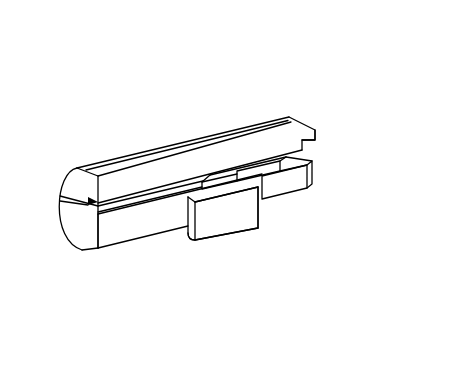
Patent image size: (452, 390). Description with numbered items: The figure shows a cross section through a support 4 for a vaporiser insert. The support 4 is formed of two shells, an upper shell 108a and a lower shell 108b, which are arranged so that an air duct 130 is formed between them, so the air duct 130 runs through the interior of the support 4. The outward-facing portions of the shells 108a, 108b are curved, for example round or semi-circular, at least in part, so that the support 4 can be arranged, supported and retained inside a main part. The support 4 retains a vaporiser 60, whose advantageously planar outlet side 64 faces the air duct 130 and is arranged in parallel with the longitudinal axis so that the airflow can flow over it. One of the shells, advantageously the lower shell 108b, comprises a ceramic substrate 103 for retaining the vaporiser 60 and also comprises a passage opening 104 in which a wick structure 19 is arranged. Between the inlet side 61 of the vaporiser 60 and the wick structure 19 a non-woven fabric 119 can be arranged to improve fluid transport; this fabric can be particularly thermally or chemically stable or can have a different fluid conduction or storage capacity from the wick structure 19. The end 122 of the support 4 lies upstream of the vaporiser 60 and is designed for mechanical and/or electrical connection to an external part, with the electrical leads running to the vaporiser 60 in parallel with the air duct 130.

The support 4 is at (366, 211).
The wick structure 19 is at (204, 243).
The vaporiser 60 is at (234, 203).
The inlet side 61 is at (208, 226).
The outlet side 64 is at (213, 175).
The ceramic substrate 103 is at (258, 166).
The passage opening 104 is at (308, 193).
The upper shell 108a is at (190, 160).
The lower shell 108b is at (138, 225).
The non-woven fabric 119 is at (261, 194).
The end 122 is at (85, 222).
The air duct 130 is at (303, 159).